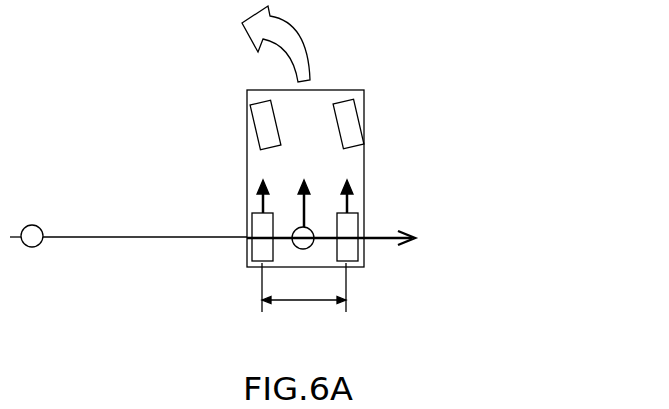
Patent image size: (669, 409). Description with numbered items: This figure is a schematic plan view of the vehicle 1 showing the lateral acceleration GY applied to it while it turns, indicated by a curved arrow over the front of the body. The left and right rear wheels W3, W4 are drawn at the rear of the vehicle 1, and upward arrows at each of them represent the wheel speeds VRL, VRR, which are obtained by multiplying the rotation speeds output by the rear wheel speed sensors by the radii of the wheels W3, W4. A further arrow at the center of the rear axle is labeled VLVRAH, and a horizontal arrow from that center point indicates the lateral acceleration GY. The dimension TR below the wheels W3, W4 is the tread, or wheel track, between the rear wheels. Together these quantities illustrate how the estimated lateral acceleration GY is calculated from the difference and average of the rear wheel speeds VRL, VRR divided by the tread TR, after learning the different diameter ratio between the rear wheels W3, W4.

The vehicle 1 is at (349, 88).
The rear left wheel W3 is at (258, 248).
The rear right wheel W4 is at (352, 251).
The lateral acceleration GY is at (263, 237).
The wheel speed of the rear left wheel VRL is at (262, 200).
The wheel speed of the rear right wheel VRR is at (348, 204).
The vehicle body speed at rear axle center VLVRAH is at (302, 204).
The tread TR is at (304, 298).